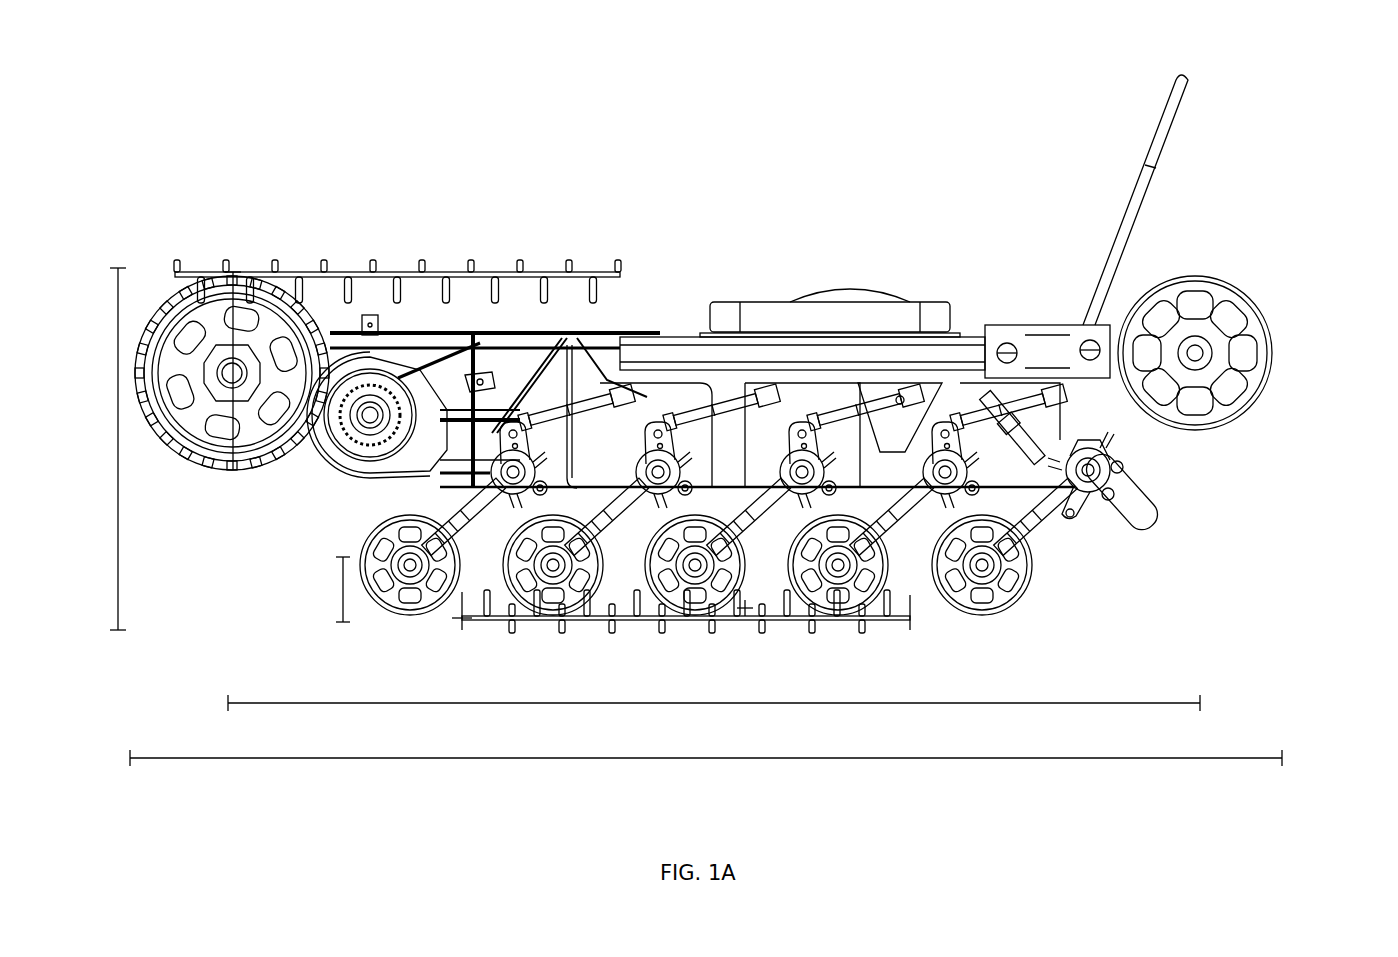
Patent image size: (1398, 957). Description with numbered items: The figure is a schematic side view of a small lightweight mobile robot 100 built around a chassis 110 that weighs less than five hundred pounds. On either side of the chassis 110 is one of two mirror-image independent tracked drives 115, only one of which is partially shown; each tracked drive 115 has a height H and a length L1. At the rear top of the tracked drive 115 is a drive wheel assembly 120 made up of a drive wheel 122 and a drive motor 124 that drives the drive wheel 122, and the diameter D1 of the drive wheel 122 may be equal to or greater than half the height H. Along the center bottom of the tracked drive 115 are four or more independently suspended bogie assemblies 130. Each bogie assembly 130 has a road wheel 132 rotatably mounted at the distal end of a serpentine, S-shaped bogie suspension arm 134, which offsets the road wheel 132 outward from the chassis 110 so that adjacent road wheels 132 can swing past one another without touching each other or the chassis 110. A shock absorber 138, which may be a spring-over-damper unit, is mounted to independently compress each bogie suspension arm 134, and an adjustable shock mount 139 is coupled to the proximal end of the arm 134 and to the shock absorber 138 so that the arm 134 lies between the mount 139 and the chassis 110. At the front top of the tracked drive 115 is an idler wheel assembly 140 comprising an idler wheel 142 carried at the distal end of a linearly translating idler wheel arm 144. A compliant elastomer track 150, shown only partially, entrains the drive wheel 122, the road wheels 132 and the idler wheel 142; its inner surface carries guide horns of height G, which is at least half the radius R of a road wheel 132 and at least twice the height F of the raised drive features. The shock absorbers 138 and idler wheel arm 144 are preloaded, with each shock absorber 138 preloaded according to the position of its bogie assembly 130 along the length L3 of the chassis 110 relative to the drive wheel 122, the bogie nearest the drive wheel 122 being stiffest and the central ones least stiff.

The lightweight mobile robot 100 is at (470, 97).
The chassis 110 is at (628, 330).
The tracked drive 115 is at (1240, 462).
The drive wheel assembly 120 is at (268, 502).
The drive wheel 122 is at (185, 455).
The drive motor 124 is at (337, 468).
The bogie assembly 130 is at (484, 578).
The road wheel 132 is at (553, 618).
The bogie suspension arm 134 is at (460, 525).
The shock absorber 138 is at (600, 412).
The adjustable shock mount 139 is at (632, 478).
The idler wheel assembly 140 is at (1058, 280).
The idler wheel 142 is at (1255, 338).
The linearly translating idler wheel arm 144 is at (962, 340).
The compliant elastomer track 150 is at (296, 268).
The diameter of the drive wheel D1 is at (193, 287).
The height of the tracked drive H is at (107, 449).
The radius of a road wheel R is at (331, 589).
The height of the guide horn G is at (455, 620).
The height of the raised drive features F is at (745, 612).
The length of the chassis L3 is at (714, 713).
The length of the tracked drive L1 is at (706, 769).